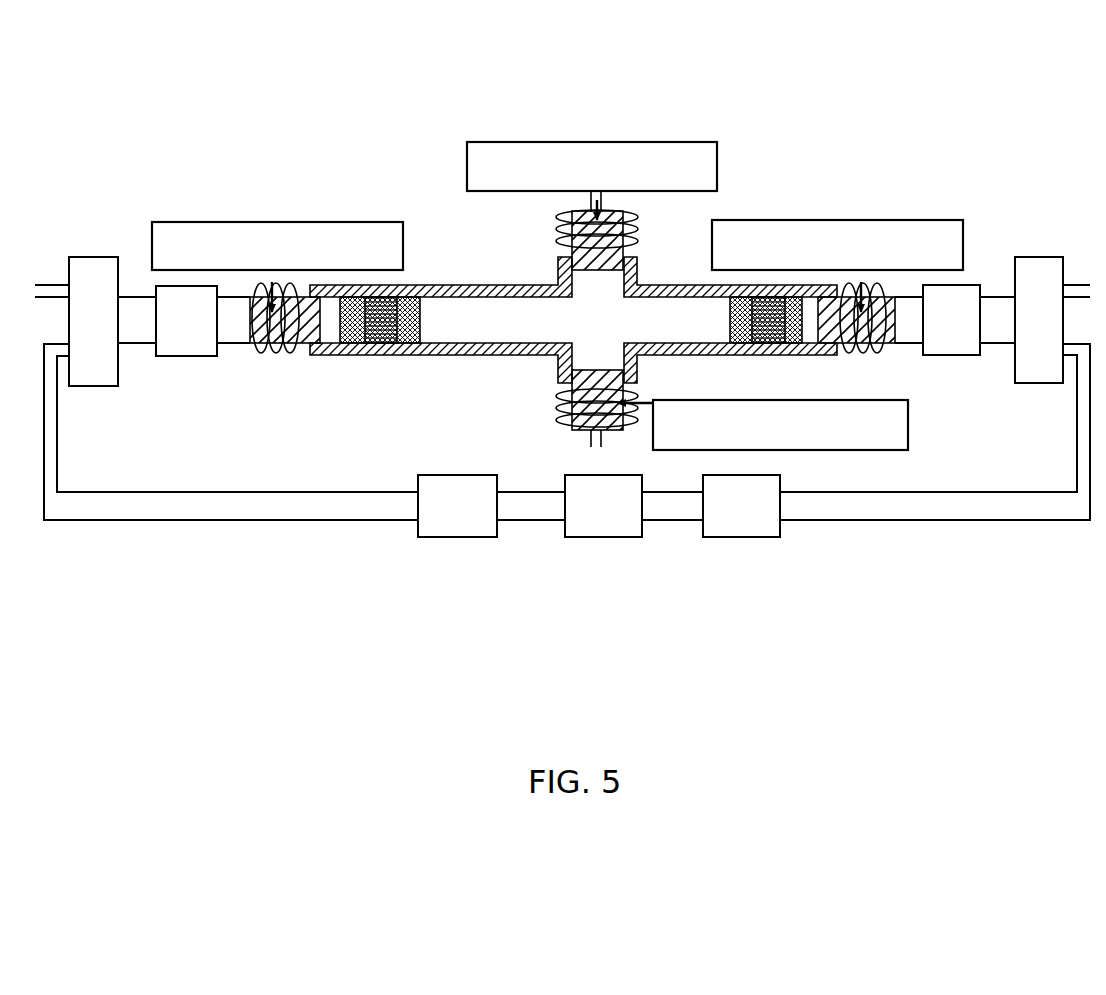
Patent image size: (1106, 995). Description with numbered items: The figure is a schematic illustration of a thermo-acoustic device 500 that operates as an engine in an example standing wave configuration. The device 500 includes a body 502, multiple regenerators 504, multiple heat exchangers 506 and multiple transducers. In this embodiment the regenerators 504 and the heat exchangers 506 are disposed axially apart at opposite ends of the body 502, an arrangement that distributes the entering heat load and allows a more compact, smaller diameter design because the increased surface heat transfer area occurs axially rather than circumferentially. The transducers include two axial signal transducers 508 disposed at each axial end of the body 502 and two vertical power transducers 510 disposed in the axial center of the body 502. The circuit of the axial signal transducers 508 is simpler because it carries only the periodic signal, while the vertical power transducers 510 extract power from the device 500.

The thermo-acoustic device 500 is at (162, 63).
The body 502 is at (513, 288).
The regenerators 504 is at (368, 345).
The heat exchangers 506 is at (423, 345).
The axial signal transducers 508 is at (270, 222).
The vertical power transducers 510 is at (585, 142).